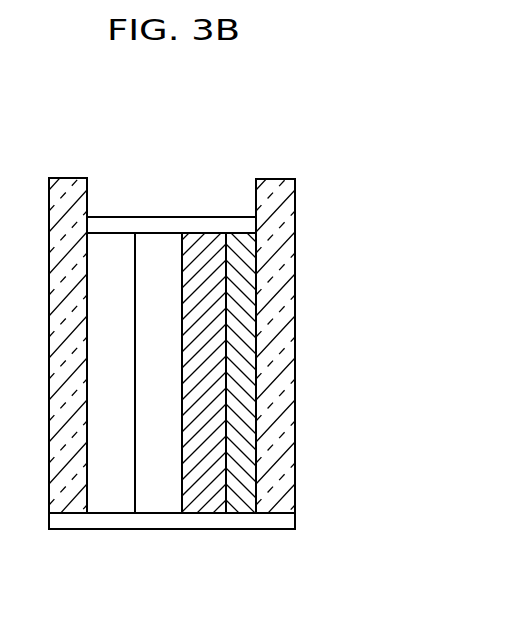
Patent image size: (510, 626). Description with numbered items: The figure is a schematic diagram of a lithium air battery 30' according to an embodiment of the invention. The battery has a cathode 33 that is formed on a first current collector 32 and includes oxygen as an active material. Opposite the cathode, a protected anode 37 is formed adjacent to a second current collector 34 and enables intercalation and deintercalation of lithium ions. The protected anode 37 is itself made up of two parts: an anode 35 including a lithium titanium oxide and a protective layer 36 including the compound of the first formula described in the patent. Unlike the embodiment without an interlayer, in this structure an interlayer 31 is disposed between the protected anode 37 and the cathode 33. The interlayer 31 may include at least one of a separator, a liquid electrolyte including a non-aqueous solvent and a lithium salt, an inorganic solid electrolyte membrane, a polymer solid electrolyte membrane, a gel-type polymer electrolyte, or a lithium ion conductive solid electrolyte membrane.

The lithium air battery 30' is at (221, 326).
The interlayer 31 is at (161, 235).
The first current collector 32 is at (69, 184).
The cathode 33 is at (112, 235).
The second current collector 34 is at (275, 184).
The anode 35 is at (240, 235).
The protective layer 36 is at (205, 237).
The protected anode 37 is at (250, 160).